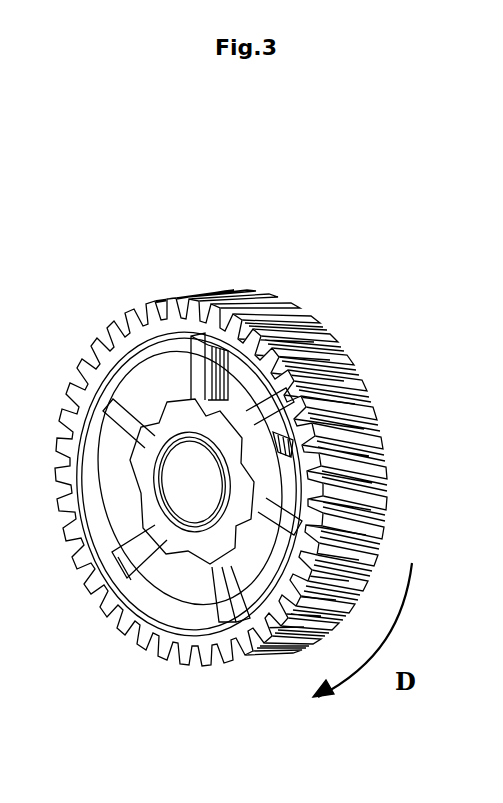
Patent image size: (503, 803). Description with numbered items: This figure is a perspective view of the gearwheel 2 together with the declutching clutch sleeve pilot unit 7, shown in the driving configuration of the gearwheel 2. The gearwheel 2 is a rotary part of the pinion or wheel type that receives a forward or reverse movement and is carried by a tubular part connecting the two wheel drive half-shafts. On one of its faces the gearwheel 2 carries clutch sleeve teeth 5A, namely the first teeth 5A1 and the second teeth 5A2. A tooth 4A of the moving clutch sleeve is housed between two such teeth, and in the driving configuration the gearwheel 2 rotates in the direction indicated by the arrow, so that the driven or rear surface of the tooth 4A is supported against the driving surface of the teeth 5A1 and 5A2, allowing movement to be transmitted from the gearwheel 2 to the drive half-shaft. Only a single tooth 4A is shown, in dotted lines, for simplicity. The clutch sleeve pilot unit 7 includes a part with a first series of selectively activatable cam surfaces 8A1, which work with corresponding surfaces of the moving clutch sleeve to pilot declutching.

The gearwheel 2 is at (318, 323).
The teeth of the moving clutch sleeve 4A is at (215, 365).
The clutch sleeve teeth 5A is at (387, 505).
The first teeth 5A1 is at (193, 348).
The second teeth 5A2 is at (342, 363).
The clutch sleeve pilot unit 7 is at (188, 545).
The cam surfaces 8A1 is at (200, 397).